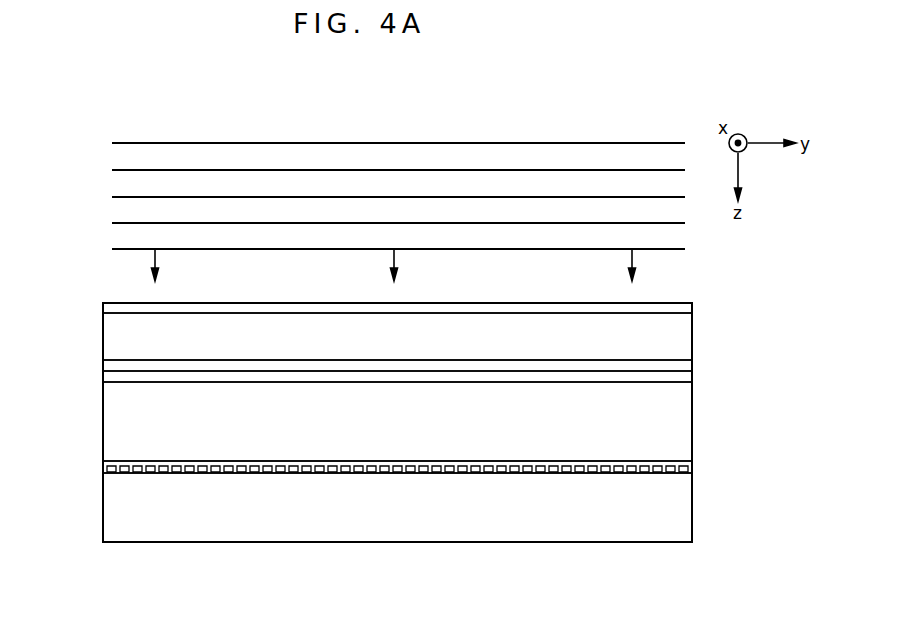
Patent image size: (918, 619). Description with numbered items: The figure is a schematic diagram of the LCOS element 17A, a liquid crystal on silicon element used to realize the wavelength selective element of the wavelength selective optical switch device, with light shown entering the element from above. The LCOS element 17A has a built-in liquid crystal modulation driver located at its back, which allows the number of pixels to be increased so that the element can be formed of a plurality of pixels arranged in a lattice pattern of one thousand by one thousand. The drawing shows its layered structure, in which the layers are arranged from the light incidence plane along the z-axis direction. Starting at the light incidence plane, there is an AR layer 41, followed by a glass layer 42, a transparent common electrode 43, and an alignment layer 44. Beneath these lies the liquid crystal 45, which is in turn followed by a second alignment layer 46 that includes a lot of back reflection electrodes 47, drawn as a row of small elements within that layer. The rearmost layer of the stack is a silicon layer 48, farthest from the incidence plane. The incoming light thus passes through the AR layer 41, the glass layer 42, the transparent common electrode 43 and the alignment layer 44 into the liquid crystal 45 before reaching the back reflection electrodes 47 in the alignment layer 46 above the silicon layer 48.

The LCOS element 17A is at (782, 297).
The AR layer 41 is at (693, 303).
The glass layer 42 is at (688, 335).
The transparent common electrode 43 is at (106, 366).
The alignment layer 44 is at (688, 377).
The liquid crystal 45 is at (110, 408).
The alignment layer 46 is at (690, 468).
The back reflection electrodes 47 is at (104, 467).
The silicon layer 48 is at (683, 510).